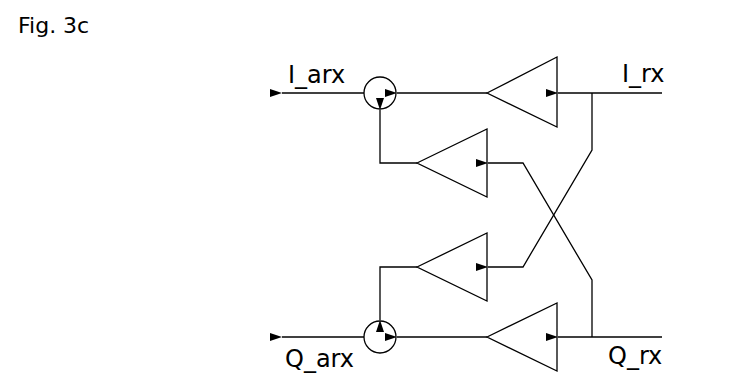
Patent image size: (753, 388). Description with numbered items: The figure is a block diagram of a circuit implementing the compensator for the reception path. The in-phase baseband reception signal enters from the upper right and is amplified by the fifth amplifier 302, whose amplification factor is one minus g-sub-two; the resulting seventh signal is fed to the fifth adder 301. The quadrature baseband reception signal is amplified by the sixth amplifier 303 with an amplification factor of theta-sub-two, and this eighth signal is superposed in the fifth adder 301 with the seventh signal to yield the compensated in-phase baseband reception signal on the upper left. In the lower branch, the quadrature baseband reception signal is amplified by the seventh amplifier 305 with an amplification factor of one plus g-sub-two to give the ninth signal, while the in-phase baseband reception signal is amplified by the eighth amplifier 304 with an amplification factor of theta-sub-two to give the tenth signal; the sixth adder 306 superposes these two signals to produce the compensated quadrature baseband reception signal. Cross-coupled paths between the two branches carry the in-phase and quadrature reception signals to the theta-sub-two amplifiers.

The summer for I_arx output 301 is at (380, 93).
The gain block 1−g2 302 is at (522, 92).
The multiplier θ2 (upper) 303 is at (452, 163).
The multiplier θ2 (lower) 304 is at (452, 267).
The gain block 1+g2 305 is at (523, 337).
The summer for Q_arx output 306 is at (380, 337).